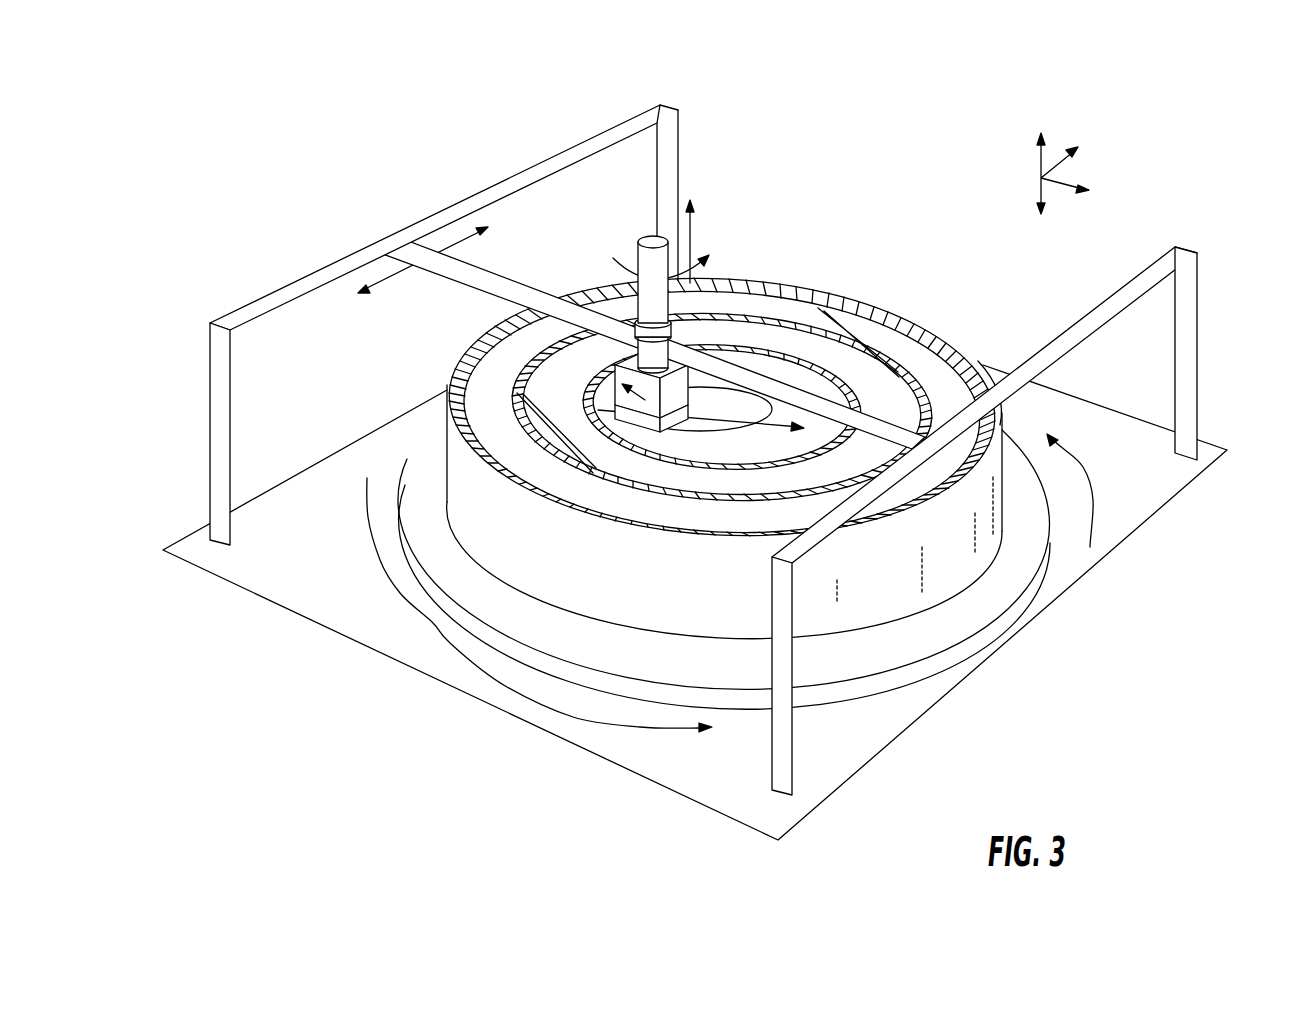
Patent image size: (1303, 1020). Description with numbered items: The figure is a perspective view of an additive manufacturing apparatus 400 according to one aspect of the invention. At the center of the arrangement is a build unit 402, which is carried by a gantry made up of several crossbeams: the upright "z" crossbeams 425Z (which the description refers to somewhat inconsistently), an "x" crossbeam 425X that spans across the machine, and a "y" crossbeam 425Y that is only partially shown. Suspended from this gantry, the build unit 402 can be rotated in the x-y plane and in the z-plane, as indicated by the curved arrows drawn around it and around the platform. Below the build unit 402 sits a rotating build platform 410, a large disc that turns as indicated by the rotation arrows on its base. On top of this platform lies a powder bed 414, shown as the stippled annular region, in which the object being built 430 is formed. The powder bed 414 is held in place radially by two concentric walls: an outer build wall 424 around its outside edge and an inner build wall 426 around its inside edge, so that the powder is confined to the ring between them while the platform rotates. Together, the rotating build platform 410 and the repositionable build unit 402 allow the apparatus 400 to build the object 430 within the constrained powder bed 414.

The additive manufacturing apparatus 400 is at (374, 137).
The build unit 402 is at (642, 414).
The rotating build platform 410 is at (892, 655).
The powder bed 414 is at (509, 460).
The outer build wall 424 is at (904, 322).
The "x" crossbeam 425X is at (528, 286).
The "y" crossbeam 425Y is at (653, 238).
The Z-axis actuator posts 425Z is at (210, 412).
The inner build wall 426 is at (752, 346).
The object being built 430 is at (830, 333).